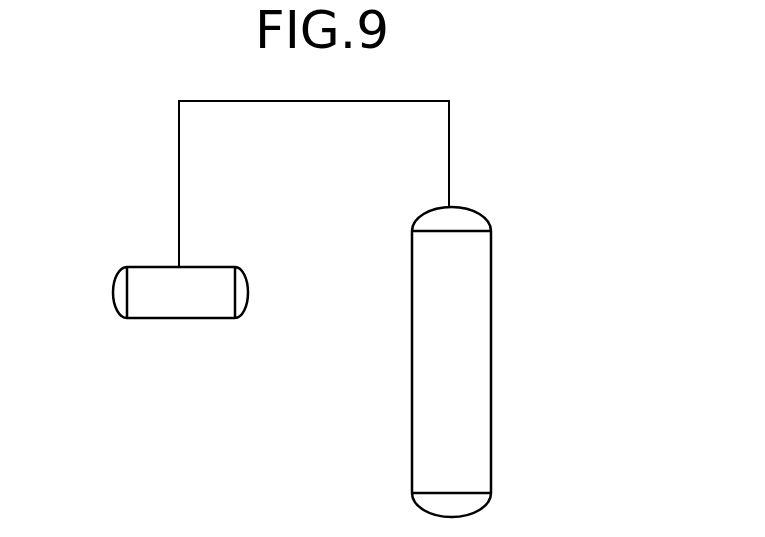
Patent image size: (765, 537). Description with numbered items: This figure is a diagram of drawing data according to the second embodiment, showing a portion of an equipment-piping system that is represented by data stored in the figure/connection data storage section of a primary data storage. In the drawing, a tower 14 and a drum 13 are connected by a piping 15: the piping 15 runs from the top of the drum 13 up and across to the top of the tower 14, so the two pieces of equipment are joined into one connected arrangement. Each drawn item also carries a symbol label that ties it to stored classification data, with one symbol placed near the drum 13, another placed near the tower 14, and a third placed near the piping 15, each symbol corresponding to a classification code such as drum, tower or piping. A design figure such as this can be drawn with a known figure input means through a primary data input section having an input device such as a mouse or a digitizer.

The drum 13 is at (240, 264).
The tower 14 is at (491, 278).
The piping 15 is at (345, 101).